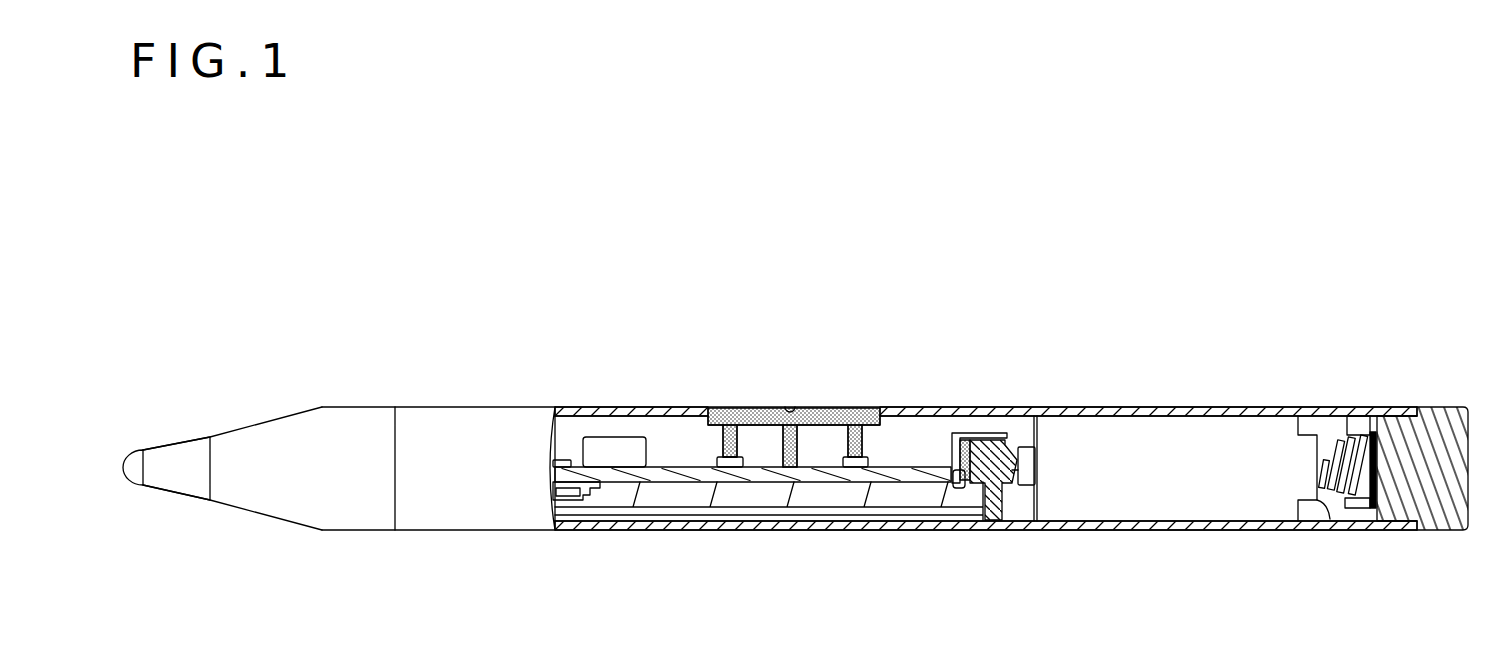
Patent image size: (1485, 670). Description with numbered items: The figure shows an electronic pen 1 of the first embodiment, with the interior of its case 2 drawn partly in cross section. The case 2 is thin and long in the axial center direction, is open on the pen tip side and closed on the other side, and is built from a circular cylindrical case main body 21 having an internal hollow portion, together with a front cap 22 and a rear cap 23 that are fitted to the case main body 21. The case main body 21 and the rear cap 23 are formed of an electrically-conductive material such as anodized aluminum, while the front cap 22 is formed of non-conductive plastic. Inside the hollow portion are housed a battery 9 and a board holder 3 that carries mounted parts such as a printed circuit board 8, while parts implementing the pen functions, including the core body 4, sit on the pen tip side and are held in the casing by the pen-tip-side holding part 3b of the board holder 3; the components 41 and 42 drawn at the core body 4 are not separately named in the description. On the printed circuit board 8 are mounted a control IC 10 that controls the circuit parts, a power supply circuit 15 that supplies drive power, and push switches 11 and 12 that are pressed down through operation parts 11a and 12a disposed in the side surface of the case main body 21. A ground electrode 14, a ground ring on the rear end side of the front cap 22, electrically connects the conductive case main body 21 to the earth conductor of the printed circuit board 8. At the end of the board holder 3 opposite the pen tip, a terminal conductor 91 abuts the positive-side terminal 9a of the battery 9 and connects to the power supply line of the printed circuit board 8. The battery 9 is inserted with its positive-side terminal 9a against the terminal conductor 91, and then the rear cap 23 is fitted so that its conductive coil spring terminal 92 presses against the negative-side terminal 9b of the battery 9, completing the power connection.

The electronic pen 1 is at (626, 262).
The case 2 is at (1071, 531).
The board holder 3 is at (769, 538).
The pen-tip-side holding part 3b is at (813, 495).
The electronic pen core body 4 is at (156, 522).
The pen tip 41 is at (133, 475).
The core holder 42 is at (176, 496).
The printed circuit board 8 is at (910, 470).
The battery 9 is at (1203, 508).
The positive-side terminal 9a is at (1027, 487).
The negative-side terminal 9b is at (1333, 521).
The control IC 10 is at (620, 447).
The push switch 11 is at (733, 462).
The operation part 11a is at (746, 420).
The push switch 12 is at (858, 465).
The operation part 12a is at (838, 420).
The ground electrode 14 is at (583, 483).
The power supply circuit 15 is at (557, 460).
The case main body 21 is at (1116, 412).
The front cap 22 is at (291, 430).
The rear cap 23 is at (1432, 508).
The terminal conductor 91 is at (983, 437).
The coil spring terminal 92 is at (1330, 452).